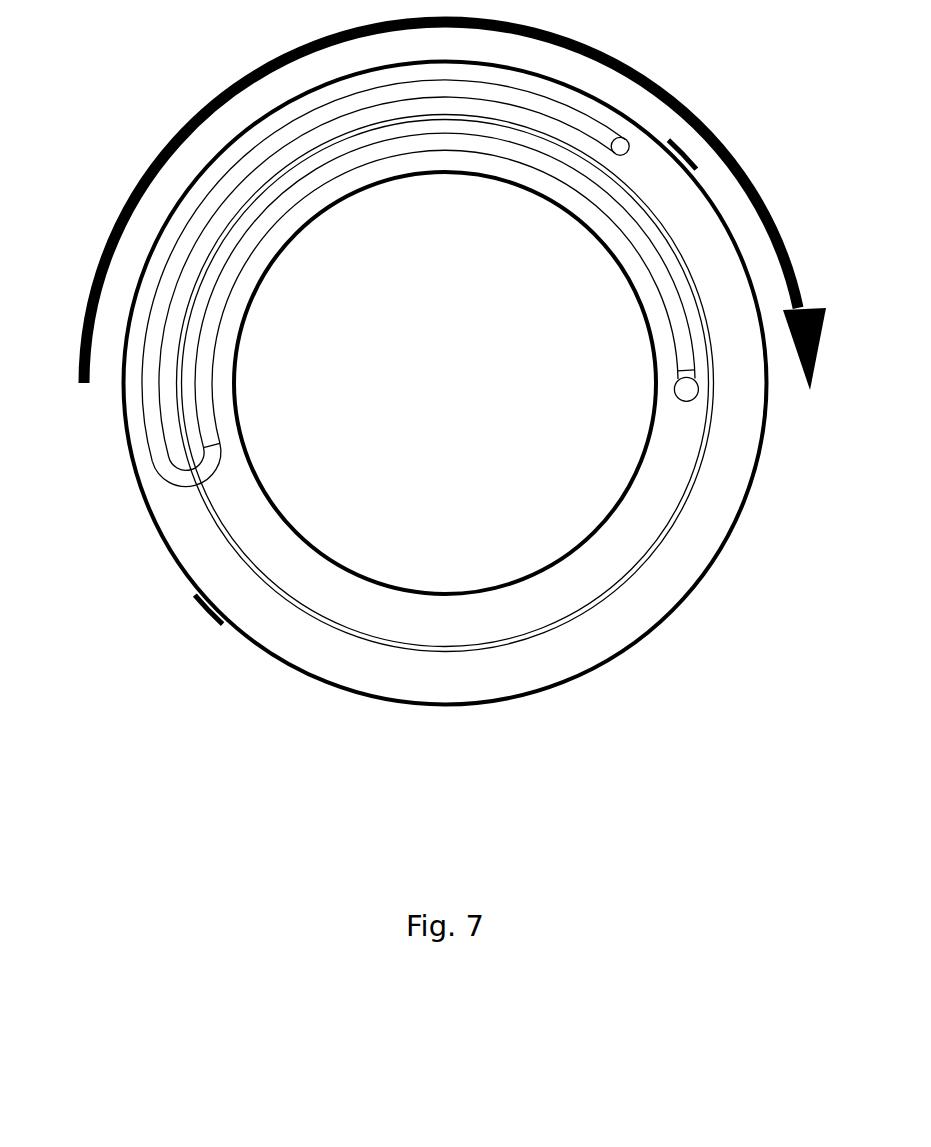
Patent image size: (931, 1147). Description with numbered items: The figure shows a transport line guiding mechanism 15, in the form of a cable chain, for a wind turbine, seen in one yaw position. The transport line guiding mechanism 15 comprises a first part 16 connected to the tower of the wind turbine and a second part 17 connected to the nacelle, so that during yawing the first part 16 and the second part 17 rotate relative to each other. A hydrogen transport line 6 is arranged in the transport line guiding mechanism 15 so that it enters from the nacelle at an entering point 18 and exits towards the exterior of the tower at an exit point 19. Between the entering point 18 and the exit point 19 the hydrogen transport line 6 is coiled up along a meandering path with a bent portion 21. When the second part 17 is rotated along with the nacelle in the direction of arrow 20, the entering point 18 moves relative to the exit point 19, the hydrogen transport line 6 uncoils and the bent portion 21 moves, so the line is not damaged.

The hydrogen transport line 6 is at (162, 297).
The transport line guiding mechanism 15 is at (676, 660).
The first part 16 is at (528, 593).
The second part 17 is at (290, 630).
The entering point 18 is at (626, 139).
The exit point 19 is at (690, 390).
The arrow 20 is at (783, 243).
The bent portion 21 is at (195, 482).